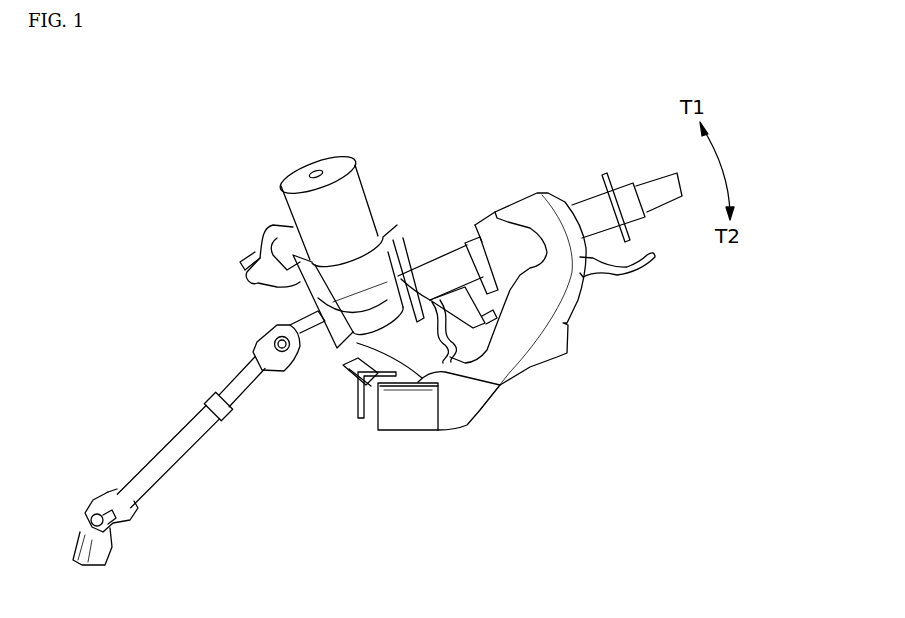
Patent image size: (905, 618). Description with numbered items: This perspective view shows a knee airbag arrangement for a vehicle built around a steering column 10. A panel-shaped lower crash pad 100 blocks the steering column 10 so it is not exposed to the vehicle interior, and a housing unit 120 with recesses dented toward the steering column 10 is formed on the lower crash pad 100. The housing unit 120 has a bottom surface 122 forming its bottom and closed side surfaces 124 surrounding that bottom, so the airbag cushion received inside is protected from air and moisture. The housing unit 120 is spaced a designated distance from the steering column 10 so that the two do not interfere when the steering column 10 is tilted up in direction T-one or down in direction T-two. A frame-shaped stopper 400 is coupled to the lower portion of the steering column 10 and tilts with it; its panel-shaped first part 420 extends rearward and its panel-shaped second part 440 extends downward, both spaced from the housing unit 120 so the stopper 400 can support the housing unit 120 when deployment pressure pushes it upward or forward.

The steering column 10 is at (380, 260).
The lower crash pad 100 is at (496, 416).
The housing unit 120 is at (402, 438).
The bottom surface 122 is at (500, 385).
The side surfaces 124 is at (428, 424).
The stopper 400 is at (323, 545).
The first part 420 is at (313, 380).
The second part 440 is at (358, 410).